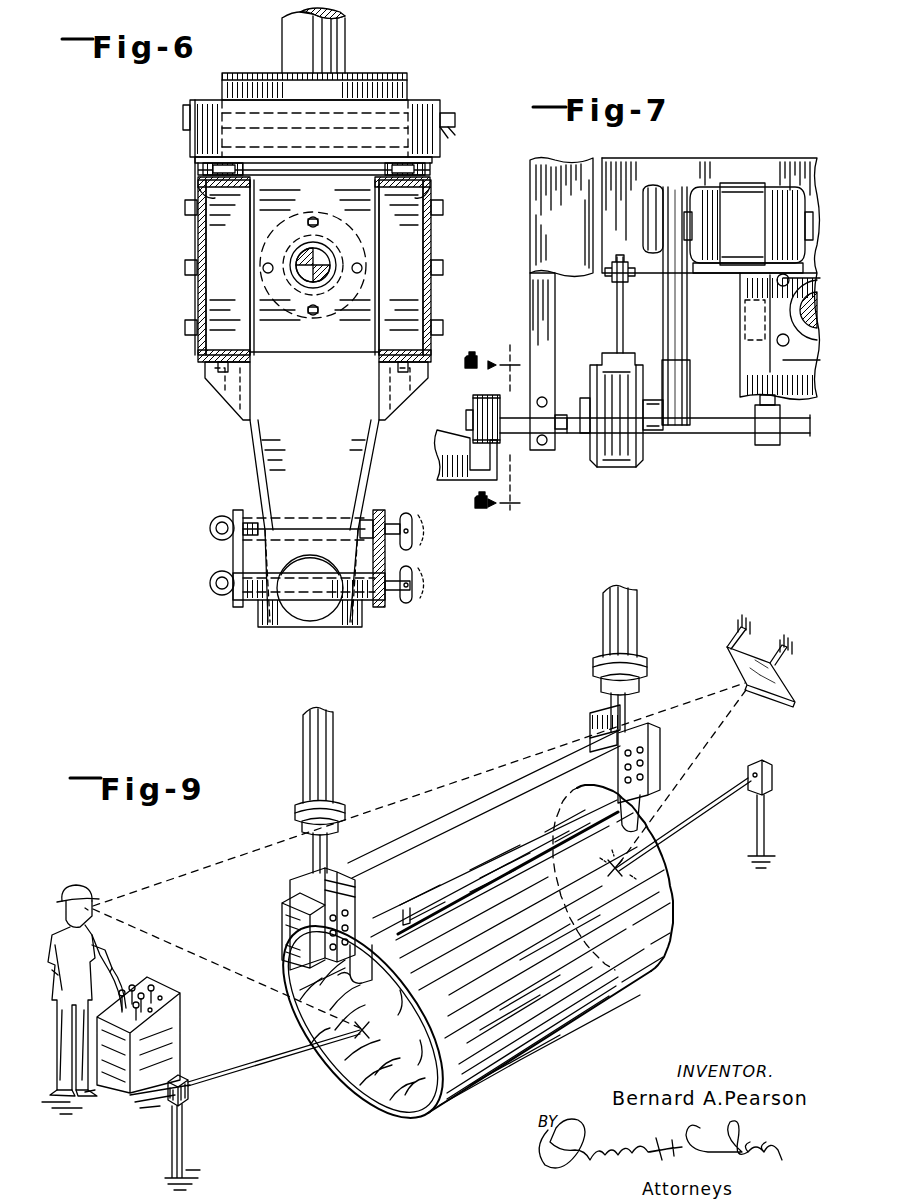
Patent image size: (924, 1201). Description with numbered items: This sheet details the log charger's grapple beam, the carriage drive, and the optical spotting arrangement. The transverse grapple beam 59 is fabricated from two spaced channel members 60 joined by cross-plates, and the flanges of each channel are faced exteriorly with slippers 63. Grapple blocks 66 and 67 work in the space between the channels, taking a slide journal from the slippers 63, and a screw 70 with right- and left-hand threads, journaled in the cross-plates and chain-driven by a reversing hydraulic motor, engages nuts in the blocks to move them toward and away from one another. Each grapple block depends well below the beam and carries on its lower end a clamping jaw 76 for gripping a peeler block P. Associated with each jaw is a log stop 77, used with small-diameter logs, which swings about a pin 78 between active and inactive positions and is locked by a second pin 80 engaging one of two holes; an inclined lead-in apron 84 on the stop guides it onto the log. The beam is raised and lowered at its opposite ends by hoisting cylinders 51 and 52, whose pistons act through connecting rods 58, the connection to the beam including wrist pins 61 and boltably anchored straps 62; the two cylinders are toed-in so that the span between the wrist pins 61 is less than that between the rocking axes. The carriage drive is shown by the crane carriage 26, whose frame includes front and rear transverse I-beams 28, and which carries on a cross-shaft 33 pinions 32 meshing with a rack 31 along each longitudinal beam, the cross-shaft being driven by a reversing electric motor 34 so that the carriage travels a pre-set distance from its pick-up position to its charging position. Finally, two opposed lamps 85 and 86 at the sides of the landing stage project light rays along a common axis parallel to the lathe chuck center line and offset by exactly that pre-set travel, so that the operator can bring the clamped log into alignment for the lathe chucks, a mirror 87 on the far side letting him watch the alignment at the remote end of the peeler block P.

In FIG. 6, the connecting rod 58 is at (332, 40).
In FIG. 9, the connecting rod 58 is at (328, 847).
In FIG. 6, the wrist pin 61 is at (452, 113).
In FIG. 6, the boltably anchored strap 62 is at (200, 168).
In FIG. 6, the slipper 63 is at (200, 183).
In FIG. 6, the channel member 60 is at (197, 239).
In FIG. 6, the grapple beam 59 is at (440, 199).
In FIG. 9, the grapple beam 59 is at (442, 819).
In FIG. 6, the screw 70 is at (330, 285).
In FIG. 6, the grapple block 67 is at (364, 440).
In FIG. 9, the grapple block 67 is at (648, 790).
In FIG. 6, the second pin 80 is at (390, 522).
In FIG. 6, the log stop 77 is at (235, 553).
In FIG. 6, the inclined lead-in apron 84 is at (263, 585).
In FIG. 6, the clamping jaw 76 is at (313, 612).
In FIG. 6, the pin 78 is at (412, 592).
In FIG. 7, the transverse I-beam 28 is at (636, 158).
In FIG. 7, the crane carriage 26 is at (735, 157).
In FIG. 7, the reversing electric motor 34 is at (755, 190).
In FIG. 7, the pinion 32 is at (482, 396).
In FIG. 7, the cross-shaft 33 is at (715, 434).
In FIG. 7, the rack 31 is at (492, 478).
In FIG. 9, the hoisting cylinder 51 is at (316, 762).
In FIG. 9, the hoisting cylinder 52 is at (634, 615).
In FIG. 9, the grapple block 66 is at (350, 970).
In FIG. 9, the mirror 87 is at (777, 700).
In FIG. 9, the lamp 86 is at (772, 782).
In FIG. 9, the lamp 85 is at (188, 1095).
In FIG. 9, the pipe P is at (617, 992).